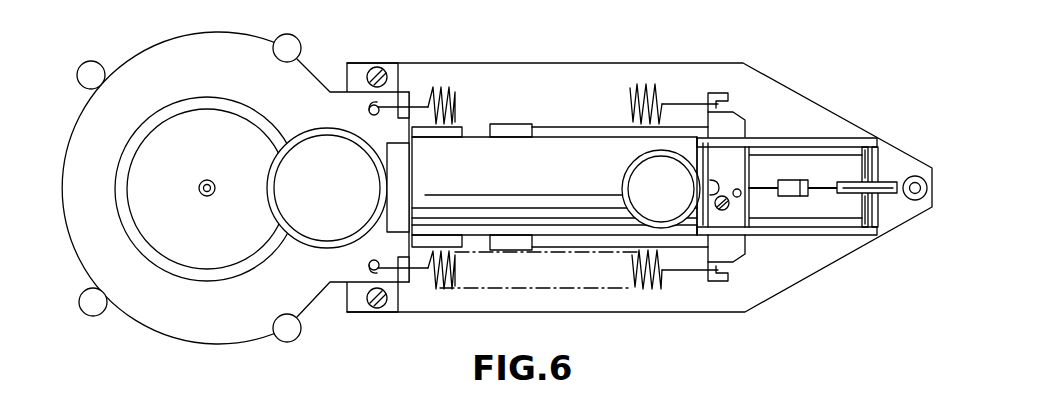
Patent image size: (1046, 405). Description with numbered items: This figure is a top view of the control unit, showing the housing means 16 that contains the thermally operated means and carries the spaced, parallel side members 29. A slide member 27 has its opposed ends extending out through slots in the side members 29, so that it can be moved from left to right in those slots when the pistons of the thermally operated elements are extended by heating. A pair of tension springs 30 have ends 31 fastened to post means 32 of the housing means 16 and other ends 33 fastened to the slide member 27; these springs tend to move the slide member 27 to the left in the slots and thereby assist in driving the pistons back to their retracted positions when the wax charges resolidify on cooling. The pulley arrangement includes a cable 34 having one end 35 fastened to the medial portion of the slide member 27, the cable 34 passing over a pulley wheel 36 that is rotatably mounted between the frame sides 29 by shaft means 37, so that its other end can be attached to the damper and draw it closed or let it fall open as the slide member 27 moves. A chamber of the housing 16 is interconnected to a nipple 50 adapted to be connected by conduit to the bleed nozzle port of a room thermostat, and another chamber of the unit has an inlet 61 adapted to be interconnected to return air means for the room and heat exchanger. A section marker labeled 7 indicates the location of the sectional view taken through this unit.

The section line 7- 7 is at (32, 210).
The housing means 16 is at (551, 137).
The slide member 27 is at (730, 122).
The side members 29 is at (805, 138).
The tension springs 30 is at (651, 84).
The ends 31 is at (418, 103).
The post means 32 is at (370, 105).
The other ends 33 is at (682, 104).
The cable 34 is at (822, 182).
The end 35 is at (740, 197).
The pulley wheel 36 is at (883, 170).
The shaft means 37 is at (880, 207).
The nipple 50 is at (207, 179).
The inlet 61 is at (627, 178).